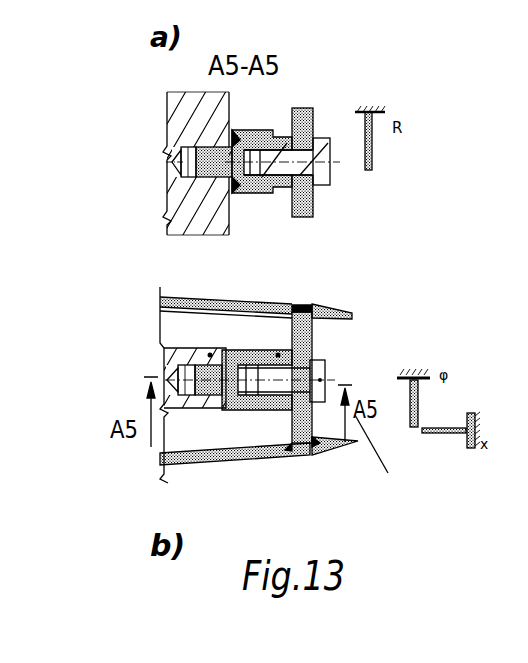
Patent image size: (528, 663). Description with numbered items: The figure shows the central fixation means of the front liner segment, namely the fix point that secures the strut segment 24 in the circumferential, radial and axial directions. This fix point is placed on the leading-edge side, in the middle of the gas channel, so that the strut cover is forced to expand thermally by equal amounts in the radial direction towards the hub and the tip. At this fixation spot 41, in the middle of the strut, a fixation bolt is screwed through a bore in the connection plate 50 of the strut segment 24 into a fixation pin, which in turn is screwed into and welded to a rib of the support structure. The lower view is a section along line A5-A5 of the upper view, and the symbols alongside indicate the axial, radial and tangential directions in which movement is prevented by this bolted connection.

The strut segment 24 is at (250, 462).
The fixation spot 41 is at (284, 269).
The connection plate 50 is at (312, 305).